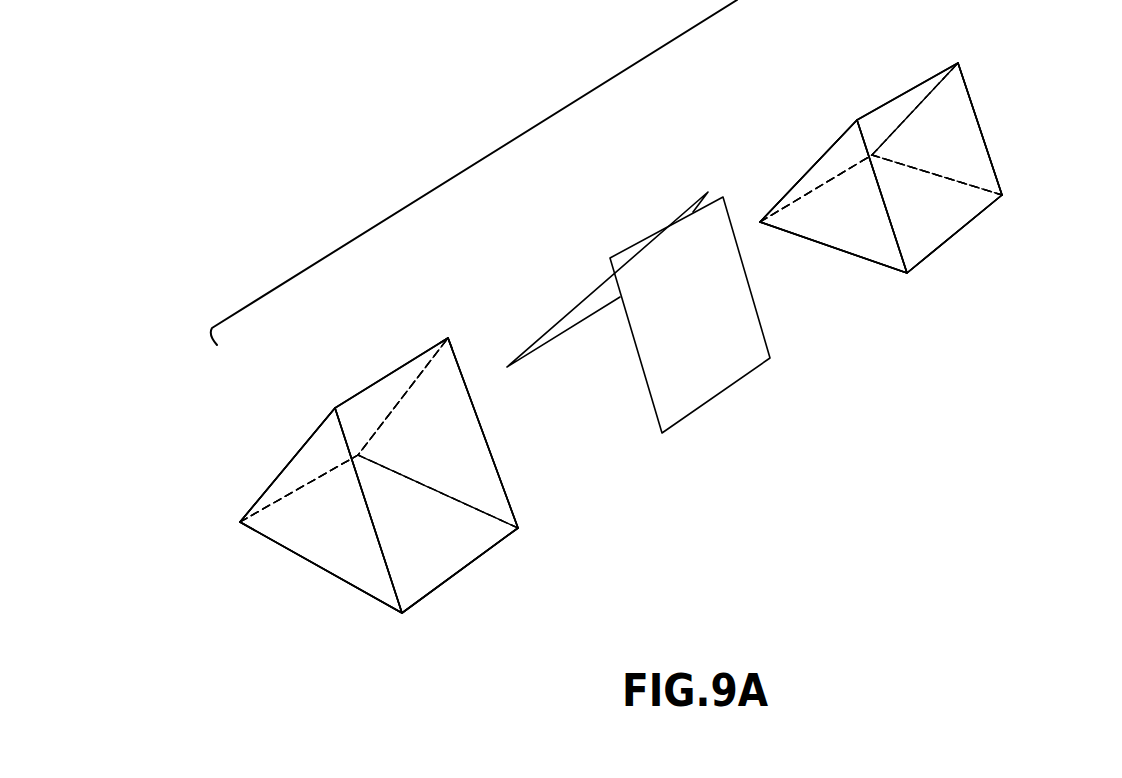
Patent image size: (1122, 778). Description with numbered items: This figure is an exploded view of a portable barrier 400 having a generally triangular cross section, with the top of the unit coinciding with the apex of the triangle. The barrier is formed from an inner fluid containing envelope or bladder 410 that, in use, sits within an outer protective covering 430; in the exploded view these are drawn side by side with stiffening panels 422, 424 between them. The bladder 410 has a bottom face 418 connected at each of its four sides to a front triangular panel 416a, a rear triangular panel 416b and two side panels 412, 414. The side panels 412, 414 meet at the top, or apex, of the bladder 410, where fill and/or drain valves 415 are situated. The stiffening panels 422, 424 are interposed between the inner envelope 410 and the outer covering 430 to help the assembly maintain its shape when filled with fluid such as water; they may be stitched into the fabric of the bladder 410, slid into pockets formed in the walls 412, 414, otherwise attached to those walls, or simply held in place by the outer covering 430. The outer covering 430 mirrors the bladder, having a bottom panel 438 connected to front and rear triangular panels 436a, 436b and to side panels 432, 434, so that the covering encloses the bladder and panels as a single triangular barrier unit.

The portable barrier 400 is at (491, 155).
The inner fluid containing envelope or bladder 410 is at (497, 552).
The side panel 412 is at (472, 482).
The side panel 414 is at (303, 430).
The fill and/or drain valves 415 is at (448, 340).
The front triangular panel 416a is at (332, 537).
The rear triangular panel 416b is at (460, 446).
The bottom face 418 is at (435, 558).
The stiffening panel 422 is at (700, 398).
The stiffening panel 424 is at (562, 298).
The outer protective covering 430 is at (1003, 197).
The side panel 432 is at (970, 163).
The side panel 434 is at (818, 150).
The front triangular panel 436a is at (867, 235).
The rear triangular panel 436b is at (963, 120).
The bottom panel 438 is at (932, 232).